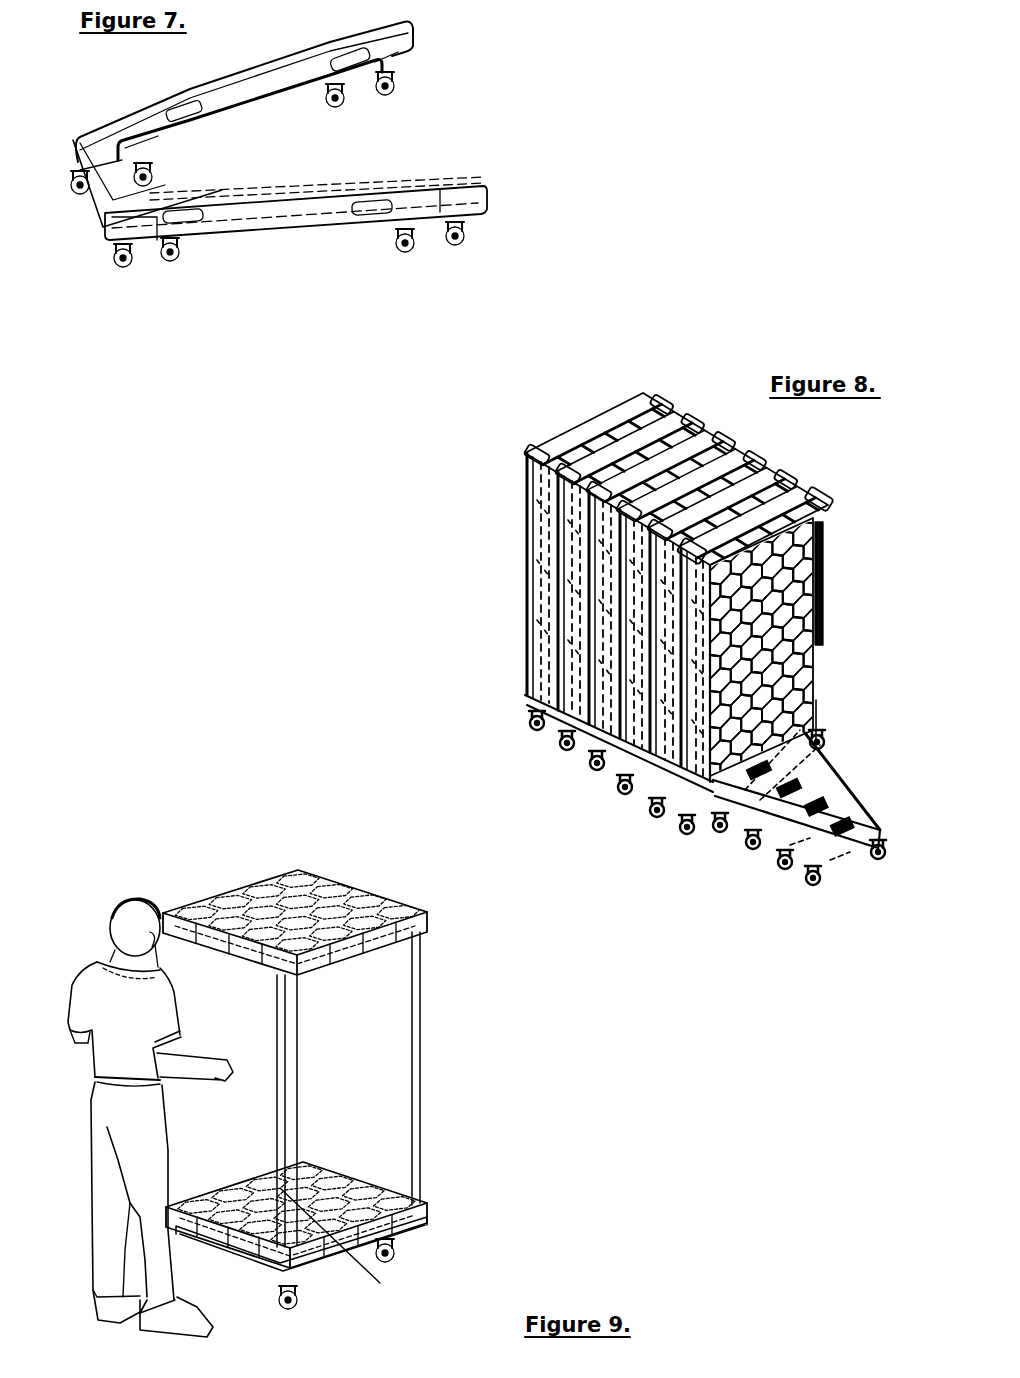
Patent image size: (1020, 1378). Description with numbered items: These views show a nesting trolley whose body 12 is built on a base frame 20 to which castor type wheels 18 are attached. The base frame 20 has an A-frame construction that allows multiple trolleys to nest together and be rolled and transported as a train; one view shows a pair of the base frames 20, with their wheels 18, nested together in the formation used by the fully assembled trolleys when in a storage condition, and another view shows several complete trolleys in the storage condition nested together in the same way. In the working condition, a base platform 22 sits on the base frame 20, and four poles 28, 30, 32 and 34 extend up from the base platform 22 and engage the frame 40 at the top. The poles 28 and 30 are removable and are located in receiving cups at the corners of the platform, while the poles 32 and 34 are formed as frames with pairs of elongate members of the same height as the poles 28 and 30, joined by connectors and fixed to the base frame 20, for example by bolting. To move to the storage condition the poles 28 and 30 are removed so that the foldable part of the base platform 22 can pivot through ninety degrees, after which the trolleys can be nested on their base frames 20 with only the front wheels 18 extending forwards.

In FIG. 8, the body 12 is at (500, 538).
In FIG. 9, the body 12 is at (325, 1061).
In FIG. 7, the wheels 18 is at (72, 190).
In FIG. 7, the base frame 20 is at (283, 213).
In FIG. 9, the base frame 20 is at (323, 1262).
In FIG. 9, the base platform 22 is at (403, 1220).
In FIG. 9, the pole 28 is at (415, 1122).
In FIG. 9, the pole 30 is at (298, 1042).
In FIG. 9, the pole 32 is at (157, 972).
In FIG. 9, the pole 34 is at (347, 1247).
In FIG. 9, the frame 40 is at (340, 925).